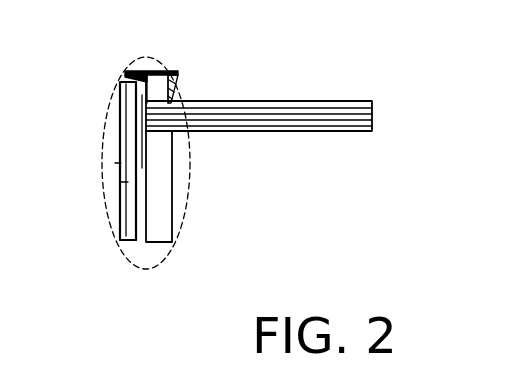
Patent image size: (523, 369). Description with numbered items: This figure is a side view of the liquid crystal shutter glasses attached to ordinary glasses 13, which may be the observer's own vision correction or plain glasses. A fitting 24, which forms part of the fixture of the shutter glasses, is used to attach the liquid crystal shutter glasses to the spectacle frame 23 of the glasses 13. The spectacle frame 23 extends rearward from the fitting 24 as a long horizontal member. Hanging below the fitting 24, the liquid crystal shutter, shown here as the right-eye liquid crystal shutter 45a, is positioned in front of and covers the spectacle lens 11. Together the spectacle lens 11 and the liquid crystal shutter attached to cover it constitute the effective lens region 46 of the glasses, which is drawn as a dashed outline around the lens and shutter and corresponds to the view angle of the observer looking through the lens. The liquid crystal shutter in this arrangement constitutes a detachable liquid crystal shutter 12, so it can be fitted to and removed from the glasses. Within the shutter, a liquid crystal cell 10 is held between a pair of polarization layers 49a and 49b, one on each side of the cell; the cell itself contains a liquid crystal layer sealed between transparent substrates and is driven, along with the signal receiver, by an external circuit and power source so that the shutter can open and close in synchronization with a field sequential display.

The liquid crystal cell 10 is at (119, 218).
The spectacle lens 11 is at (157, 208).
The detachable liquid crystal shutter 12 is at (119, 163).
The glasses 13 is at (318, 69).
The spectacle frame 23 is at (322, 133).
The fitting 24 is at (160, 70).
The right-eye liquid crystal shutter 45a is at (126, 242).
The effective lens region 46 is at (144, 57).
The polarization layer 49a is at (142, 166).
The polarization layer 49b is at (118, 182).